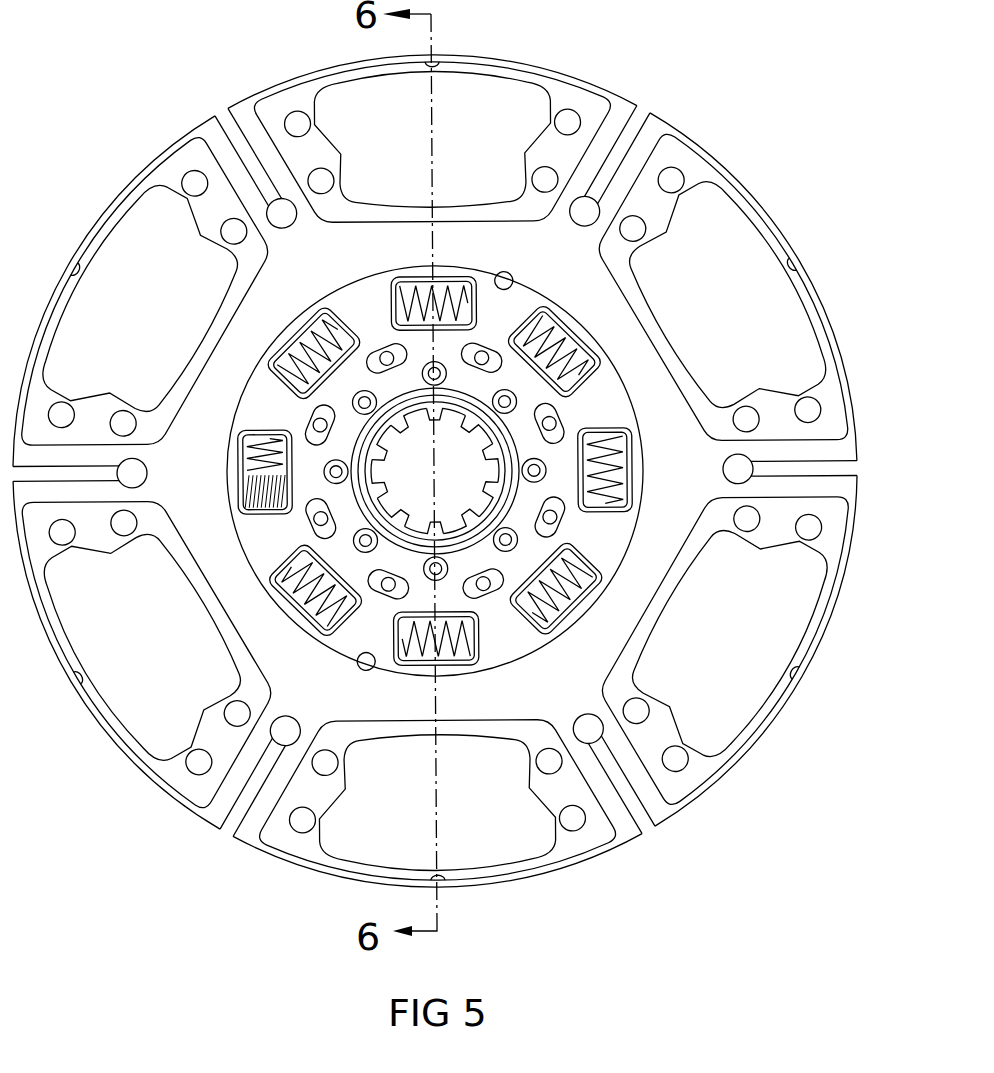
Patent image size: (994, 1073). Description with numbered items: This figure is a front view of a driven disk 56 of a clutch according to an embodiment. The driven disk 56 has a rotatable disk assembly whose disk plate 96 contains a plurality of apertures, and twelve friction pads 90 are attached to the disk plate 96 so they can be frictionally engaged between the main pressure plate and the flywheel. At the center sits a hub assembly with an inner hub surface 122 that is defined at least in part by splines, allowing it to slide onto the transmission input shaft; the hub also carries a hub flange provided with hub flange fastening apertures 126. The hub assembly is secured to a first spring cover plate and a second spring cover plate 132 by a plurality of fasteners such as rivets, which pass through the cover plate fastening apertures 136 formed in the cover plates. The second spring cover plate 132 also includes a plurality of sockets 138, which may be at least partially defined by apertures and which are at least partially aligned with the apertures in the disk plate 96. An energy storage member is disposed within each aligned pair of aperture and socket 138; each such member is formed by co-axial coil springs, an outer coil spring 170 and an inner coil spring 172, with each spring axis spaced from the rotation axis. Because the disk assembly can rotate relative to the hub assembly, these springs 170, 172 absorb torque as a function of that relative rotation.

The driven disk 56 is at (691, 99).
The friction pads 90 is at (470, 97).
The disk plate 96 is at (245, 640).
The inner hub surface 122 is at (487, 440).
The hub flange fastening apertures 126 is at (490, 492).
The second spring cover plate 132 is at (258, 383).
The cover plate fastening apertures 136 is at (513, 400).
The sockets 138 is at (342, 292).
The outer coil spring 170 is at (250, 447).
The inner coil spring 172 is at (268, 500).